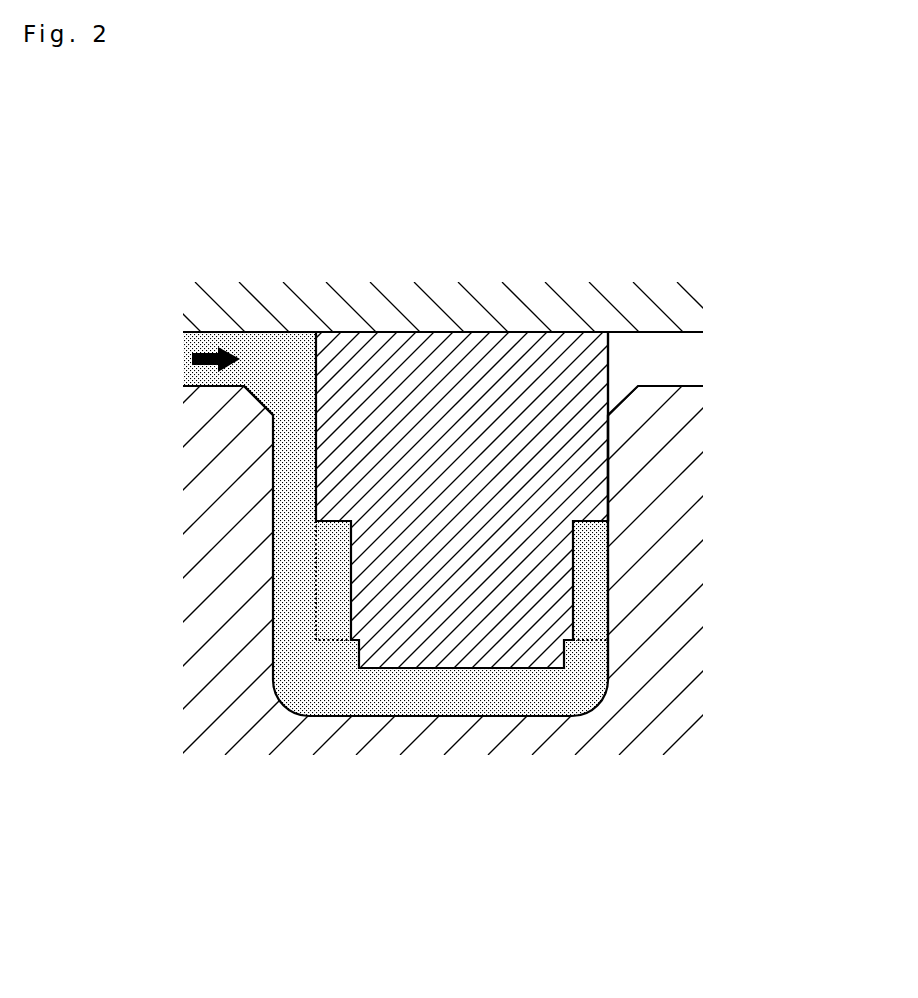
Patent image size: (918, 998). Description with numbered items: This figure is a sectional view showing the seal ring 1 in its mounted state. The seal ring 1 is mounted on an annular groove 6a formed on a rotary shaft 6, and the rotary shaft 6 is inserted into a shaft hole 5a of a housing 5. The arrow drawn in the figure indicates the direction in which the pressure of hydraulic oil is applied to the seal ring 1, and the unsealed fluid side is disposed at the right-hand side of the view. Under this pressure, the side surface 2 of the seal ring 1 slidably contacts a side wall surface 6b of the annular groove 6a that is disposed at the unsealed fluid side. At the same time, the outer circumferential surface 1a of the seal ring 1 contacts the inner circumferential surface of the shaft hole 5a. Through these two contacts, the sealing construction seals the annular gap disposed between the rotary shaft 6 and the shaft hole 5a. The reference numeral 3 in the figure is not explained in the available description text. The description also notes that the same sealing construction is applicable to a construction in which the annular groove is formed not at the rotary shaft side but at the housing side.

The seal ring 1 is at (446, 367).
The outer circumferential surface 1a is at (567, 332).
The side surface 2 is at (608, 480).
The coating layer / resin 3 is at (573, 577).
The housing 5 is at (350, 303).
The shaft hole 5a is at (212, 332).
The rotary shaft 6 is at (632, 732).
The annular groove 6a is at (414, 715).
The side wall surface 6b is at (608, 653).